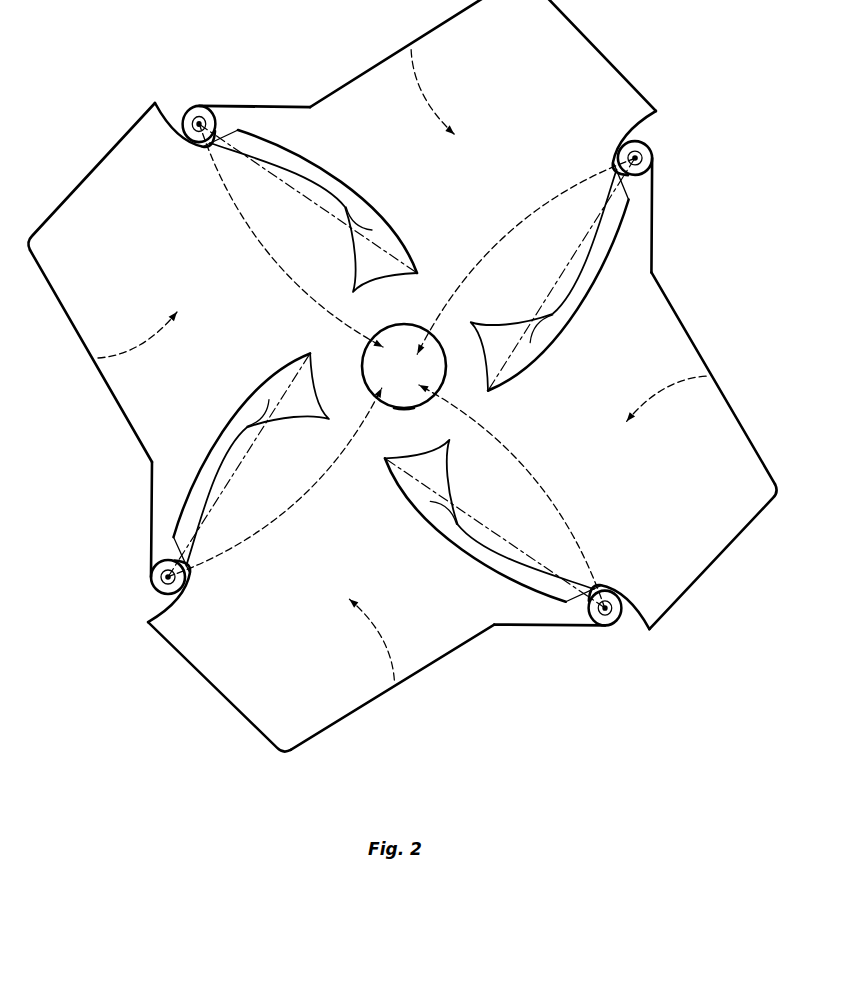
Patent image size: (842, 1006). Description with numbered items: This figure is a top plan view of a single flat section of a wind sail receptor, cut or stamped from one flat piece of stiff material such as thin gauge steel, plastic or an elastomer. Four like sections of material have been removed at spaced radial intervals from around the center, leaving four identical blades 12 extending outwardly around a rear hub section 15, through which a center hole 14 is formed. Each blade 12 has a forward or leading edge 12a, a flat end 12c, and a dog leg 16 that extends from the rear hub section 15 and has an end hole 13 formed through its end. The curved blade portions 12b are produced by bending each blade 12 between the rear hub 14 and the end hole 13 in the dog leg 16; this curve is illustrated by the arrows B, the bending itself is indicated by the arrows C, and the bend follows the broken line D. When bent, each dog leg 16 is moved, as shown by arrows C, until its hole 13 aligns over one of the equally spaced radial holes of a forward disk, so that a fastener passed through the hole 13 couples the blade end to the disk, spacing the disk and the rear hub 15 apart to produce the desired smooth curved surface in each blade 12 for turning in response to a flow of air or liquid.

The blade 12 is at (402, 376).
The leading edge 12a is at (385, 58).
The curved flap 12b is at (400, 366).
The flat end 12c is at (606, 52).
The end hole 13 is at (200, 107).
The center hole 14 is at (385, 418).
The rear hub section 15 is at (398, 352).
The dog leg 16 is at (263, 117).
The arrows B is at (147, 341).
The arrows C is at (253, 230).
The broken line D is at (298, 195).